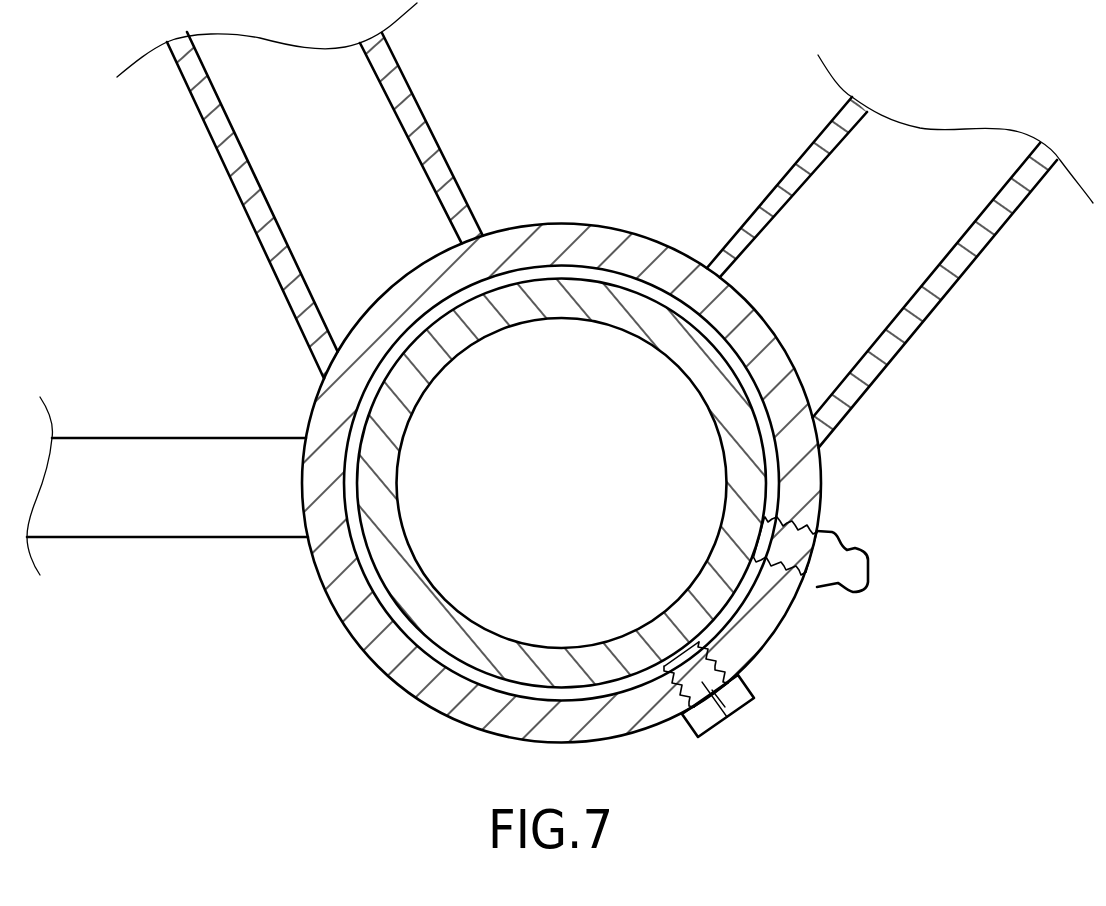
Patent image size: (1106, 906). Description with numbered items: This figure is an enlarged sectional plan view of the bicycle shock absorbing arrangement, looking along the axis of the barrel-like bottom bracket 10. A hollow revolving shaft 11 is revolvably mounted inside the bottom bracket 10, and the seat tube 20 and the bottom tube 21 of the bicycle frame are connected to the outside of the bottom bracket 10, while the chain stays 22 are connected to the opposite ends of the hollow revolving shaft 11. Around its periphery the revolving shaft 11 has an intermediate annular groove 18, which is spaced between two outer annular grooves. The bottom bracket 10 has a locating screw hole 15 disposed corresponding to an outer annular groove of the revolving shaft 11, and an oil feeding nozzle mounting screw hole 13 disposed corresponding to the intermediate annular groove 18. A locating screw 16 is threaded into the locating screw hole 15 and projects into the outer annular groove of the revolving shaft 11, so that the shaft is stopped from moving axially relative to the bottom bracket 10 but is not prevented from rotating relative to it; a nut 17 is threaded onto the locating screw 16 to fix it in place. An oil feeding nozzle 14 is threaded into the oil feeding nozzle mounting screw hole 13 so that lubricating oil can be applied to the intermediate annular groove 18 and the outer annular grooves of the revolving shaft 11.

The bottom bracket 10 is at (385, 645).
The hollow revolving shaft 11 is at (490, 648).
The oil feeding nozzle mounting screw hole 13 is at (800, 595).
The oil feeding nozzle 14 is at (850, 570).
The locating screw hole 15 is at (727, 660).
The locating screw 16 is at (737, 720).
The nut 17 is at (690, 728).
The intermediate annular groove 18 is at (720, 617).
The seat tube 20 is at (348, 230).
The bottom tube 21 is at (872, 295).
The chain stays 22 is at (145, 480).